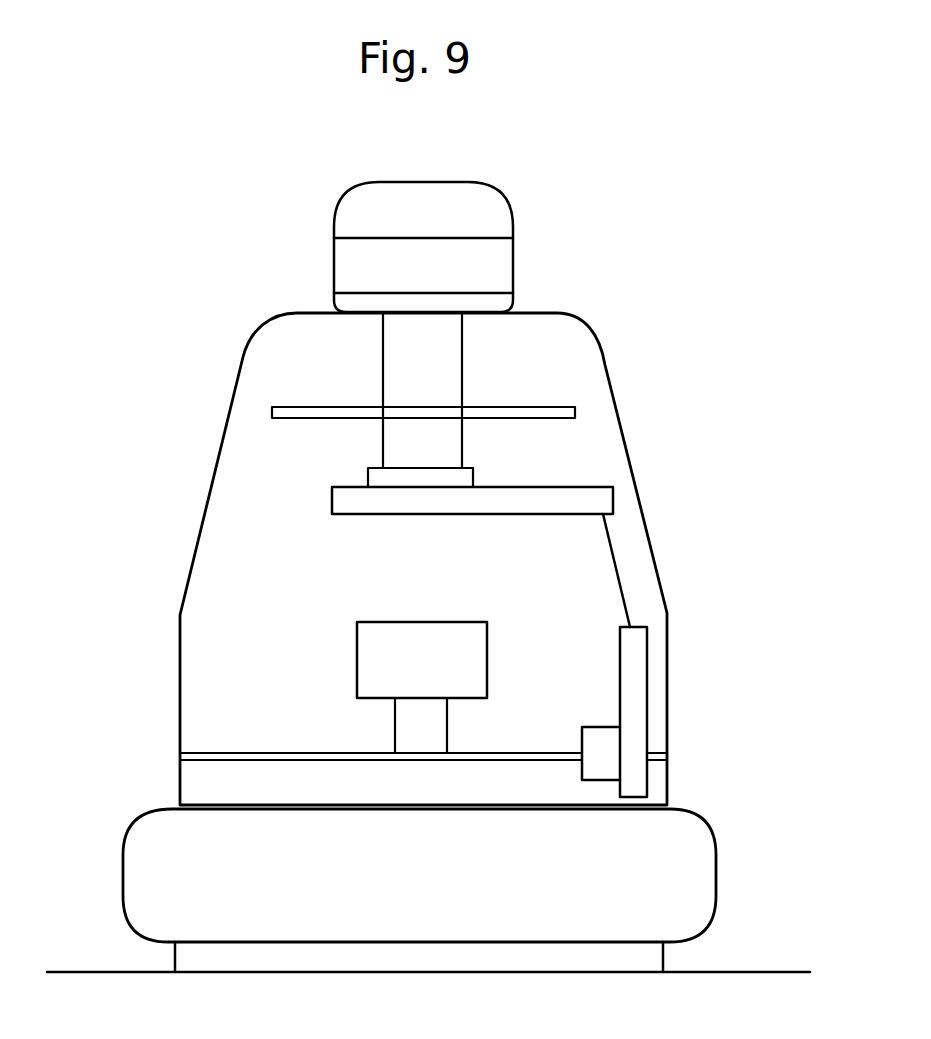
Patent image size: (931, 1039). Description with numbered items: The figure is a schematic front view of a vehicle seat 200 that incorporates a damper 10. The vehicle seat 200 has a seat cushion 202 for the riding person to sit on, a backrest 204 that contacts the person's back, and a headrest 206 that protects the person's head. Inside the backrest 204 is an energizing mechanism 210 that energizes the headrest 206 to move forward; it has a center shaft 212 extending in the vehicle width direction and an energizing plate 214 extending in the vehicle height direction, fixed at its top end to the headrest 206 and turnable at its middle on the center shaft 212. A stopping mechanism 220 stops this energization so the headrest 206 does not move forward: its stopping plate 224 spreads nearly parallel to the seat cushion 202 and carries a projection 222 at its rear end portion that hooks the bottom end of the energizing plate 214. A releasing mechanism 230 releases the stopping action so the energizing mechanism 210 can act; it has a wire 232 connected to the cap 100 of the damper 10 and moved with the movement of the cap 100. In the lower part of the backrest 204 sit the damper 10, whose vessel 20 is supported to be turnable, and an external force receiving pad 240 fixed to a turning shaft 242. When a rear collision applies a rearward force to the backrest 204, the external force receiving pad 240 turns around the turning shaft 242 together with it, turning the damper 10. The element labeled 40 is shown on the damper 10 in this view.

The vehicle seat 200 is at (623, 235).
The seat cushion 202 is at (714, 833).
The backrest 204 is at (240, 368).
The headrest 206 is at (513, 200).
The energizing mechanism 210 is at (498, 357).
The center shaft 212 is at (572, 412).
The energizing plate 214 is at (383, 362).
The stopping mechanism 220 is at (584, 444).
The projection 222 is at (383, 476).
The stopping plate 224 is at (597, 511).
The releasing mechanism 230 is at (649, 607).
The wire 232 is at (609, 580).
The external force receiving pad 240 is at (372, 643).
The turning shaft 242 is at (242, 752).
The damper 10 is at (654, 744).
The cap 100 is at (626, 712).
The sensor body 40 is at (582, 752).
The vessel 20 is at (602, 783).